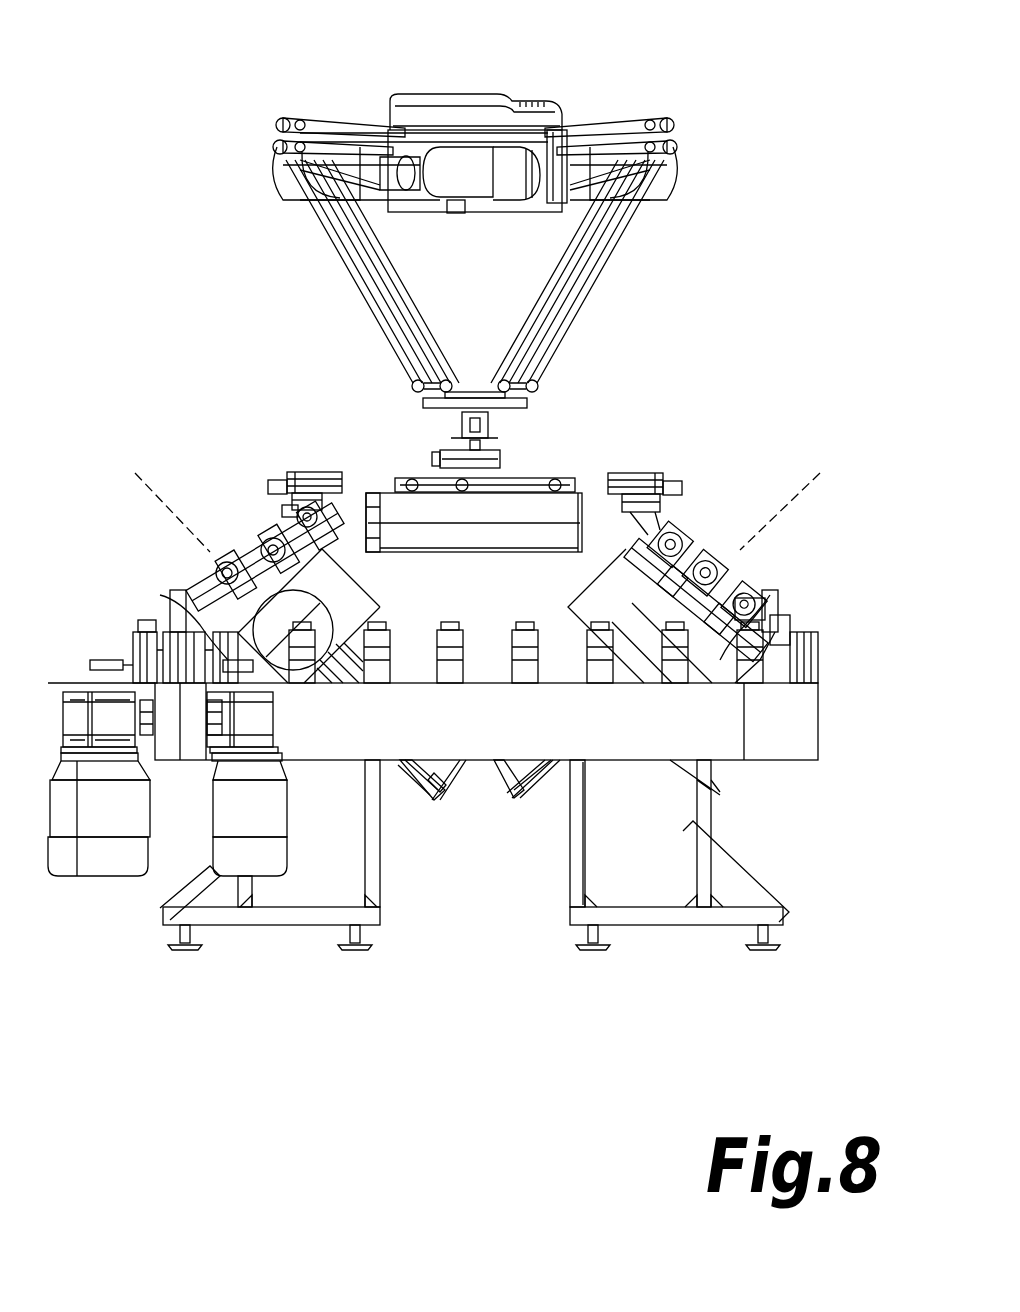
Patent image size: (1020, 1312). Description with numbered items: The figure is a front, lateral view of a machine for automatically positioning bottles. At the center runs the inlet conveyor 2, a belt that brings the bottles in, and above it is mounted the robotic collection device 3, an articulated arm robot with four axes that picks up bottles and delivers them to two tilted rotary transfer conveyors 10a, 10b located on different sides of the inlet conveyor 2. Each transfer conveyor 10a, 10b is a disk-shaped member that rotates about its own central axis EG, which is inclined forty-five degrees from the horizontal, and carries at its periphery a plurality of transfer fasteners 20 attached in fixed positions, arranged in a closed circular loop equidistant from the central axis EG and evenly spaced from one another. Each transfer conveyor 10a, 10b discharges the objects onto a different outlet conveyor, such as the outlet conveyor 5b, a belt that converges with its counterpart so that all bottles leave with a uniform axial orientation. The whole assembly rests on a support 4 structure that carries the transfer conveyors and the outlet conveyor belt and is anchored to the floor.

The robotic collection device 3 is at (428, 93).
The inlet conveyor 2 is at (378, 492).
The central axis EG is at (135, 473).
The transfer fasteners 20 is at (278, 535).
The transfer conveyor 10a is at (207, 592).
The transfer conveyor 10b is at (735, 597).
The outlet conveyor 5b is at (486, 683).
The support structure 4 is at (376, 852).